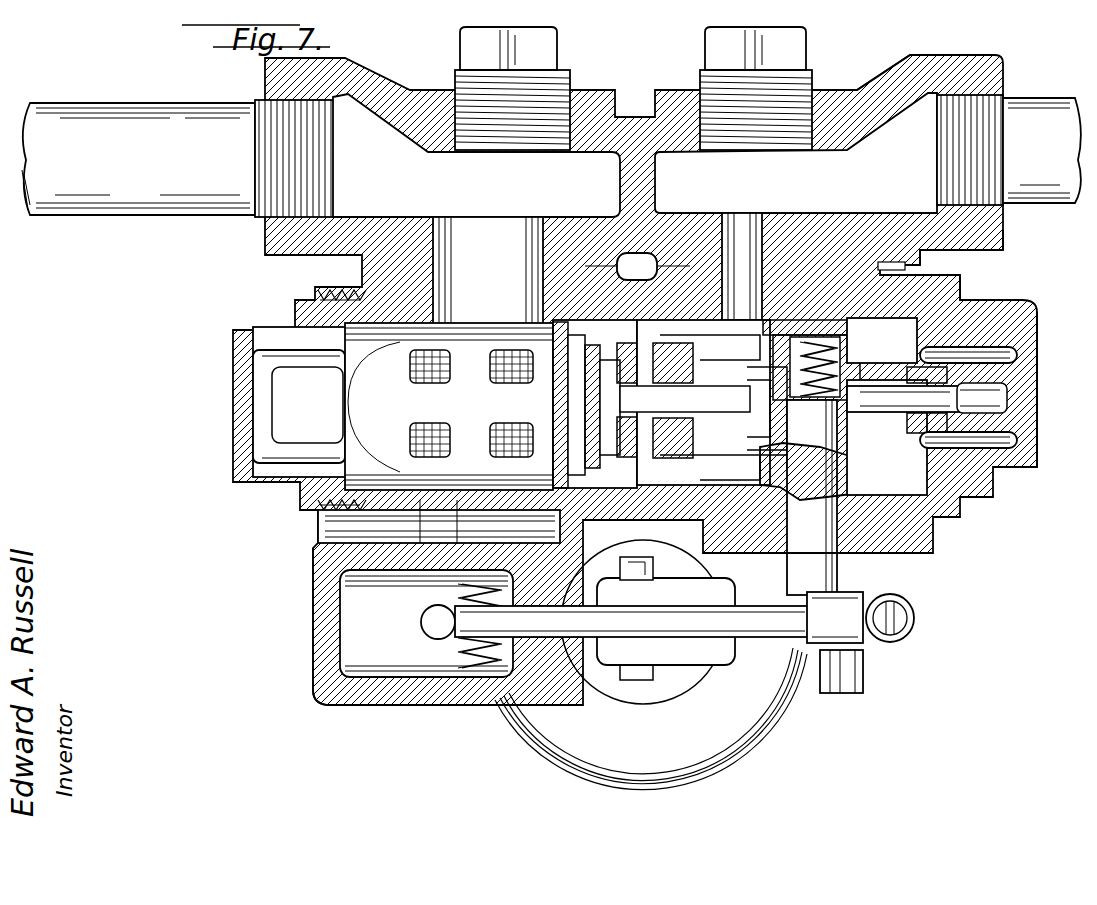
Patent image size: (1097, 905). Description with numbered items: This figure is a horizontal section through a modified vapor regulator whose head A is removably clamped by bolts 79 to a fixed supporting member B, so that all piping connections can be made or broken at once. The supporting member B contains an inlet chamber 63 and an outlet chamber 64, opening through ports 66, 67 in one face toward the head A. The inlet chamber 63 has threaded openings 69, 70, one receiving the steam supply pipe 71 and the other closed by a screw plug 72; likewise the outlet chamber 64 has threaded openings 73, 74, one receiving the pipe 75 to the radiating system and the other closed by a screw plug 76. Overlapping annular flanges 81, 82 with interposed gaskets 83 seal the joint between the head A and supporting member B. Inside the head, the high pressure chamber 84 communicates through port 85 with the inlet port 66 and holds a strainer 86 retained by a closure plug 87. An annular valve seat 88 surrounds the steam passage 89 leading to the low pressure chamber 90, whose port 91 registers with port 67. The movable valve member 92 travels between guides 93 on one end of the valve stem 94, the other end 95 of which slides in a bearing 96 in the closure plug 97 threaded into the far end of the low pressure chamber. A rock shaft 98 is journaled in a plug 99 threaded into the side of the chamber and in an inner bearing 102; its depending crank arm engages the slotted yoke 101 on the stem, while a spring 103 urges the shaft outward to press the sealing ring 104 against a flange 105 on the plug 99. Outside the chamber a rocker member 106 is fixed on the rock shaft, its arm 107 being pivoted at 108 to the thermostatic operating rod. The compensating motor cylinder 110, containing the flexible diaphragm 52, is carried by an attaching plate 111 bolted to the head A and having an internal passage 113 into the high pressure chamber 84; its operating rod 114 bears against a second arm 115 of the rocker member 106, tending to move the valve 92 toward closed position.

The flexible diaphragm 52 is at (480, 665).
The inlet chamber 63 is at (386, 95).
The outlet chamber 64 is at (880, 120).
The port 66 is at (468, 240).
The port 67 is at (776, 228).
The threaded opening 69 is at (385, 140).
The threaded opening 70 is at (492, 150).
The steam supply pipe 71 is at (158, 212).
The screw plug 72 is at (565, 72).
The threaded opening 73 is at (940, 170).
The threaded opening 74 is at (768, 150).
The pipe 75 is at (1035, 100).
The screw plug 76 is at (808, 72).
The bolts 79 is at (850, 682).
The annular flange 81 is at (878, 262).
The annular flange 82 is at (912, 262).
The gaskets 83 is at (878, 246).
The high pressure chamber 84 is at (390, 485).
The port 85 is at (470, 300).
The strainer 86 is at (485, 338).
The closure plug 87 is at (235, 478).
The annular valve seat 88 is at (560, 372).
The steam passage 89 is at (590, 405).
The low pressure chamber 90 is at (752, 335).
The port 91 is at (755, 290).
The movable valve member 92 is at (685, 412).
The guides 93 is at (710, 407).
The valve stem 94 is at (740, 412).
The other end of valve stem 95 is at (925, 405).
The bearing 96 is at (990, 355).
The closure plug 97 is at (1037, 348).
The rock shaft 98 is at (821, 464).
The plug 99 is at (935, 546).
The yoke 101 is at (758, 452).
The bearing 102 is at (840, 368).
The spring 103 is at (838, 352).
The annular gasket or sealing ring 104 is at (876, 478).
The flange 105 is at (872, 500).
The rocker member 106 is at (862, 598).
The arm 107 is at (745, 606).
The pivotal connection 108 is at (635, 678).
The cylinder 110 is at (340, 634).
The attaching plate 111 is at (423, 626).
The internal passage 113 is at (435, 640).
The operating rod 114 is at (720, 645).
The second arm 115 is at (885, 642).
The head A is at (962, 298).
The supporting member B is at (1011, 242).